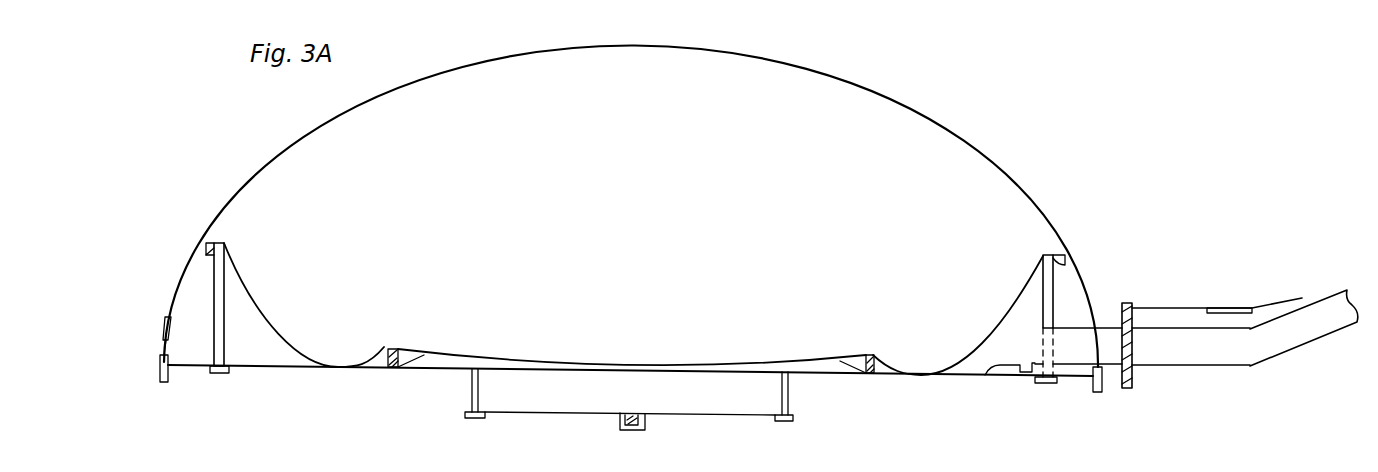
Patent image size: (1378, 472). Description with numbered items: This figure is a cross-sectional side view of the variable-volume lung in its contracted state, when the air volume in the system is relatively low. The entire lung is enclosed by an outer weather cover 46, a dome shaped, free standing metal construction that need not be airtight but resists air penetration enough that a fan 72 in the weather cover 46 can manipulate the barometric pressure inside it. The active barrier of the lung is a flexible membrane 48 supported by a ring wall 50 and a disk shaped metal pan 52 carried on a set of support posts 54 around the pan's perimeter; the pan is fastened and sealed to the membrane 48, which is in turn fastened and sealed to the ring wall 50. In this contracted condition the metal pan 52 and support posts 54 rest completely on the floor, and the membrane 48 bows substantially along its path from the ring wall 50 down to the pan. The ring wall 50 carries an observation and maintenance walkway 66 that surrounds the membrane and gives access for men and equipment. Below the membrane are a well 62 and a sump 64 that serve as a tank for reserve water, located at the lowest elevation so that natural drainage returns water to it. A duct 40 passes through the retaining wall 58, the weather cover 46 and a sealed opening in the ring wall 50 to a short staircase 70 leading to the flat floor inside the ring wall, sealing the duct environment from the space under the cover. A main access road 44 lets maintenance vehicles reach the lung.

The duct 40 is at (1225, 367).
The main access road 44 is at (1224, 307).
The outer weather cover 46 is at (283, 152).
The flexible membrane 48 is at (284, 326).
The ring wall 50 is at (212, 290).
The metal pan 52 is at (524, 326).
The support posts 54 is at (386, 367).
The retaining wall 58 is at (1127, 303).
The well 62 is at (540, 411).
The sump 64 is at (633, 412).
The observation and maintenance walkway 66 is at (206, 246).
The short staircase 70 is at (1010, 368).
The fan 72 is at (163, 327).